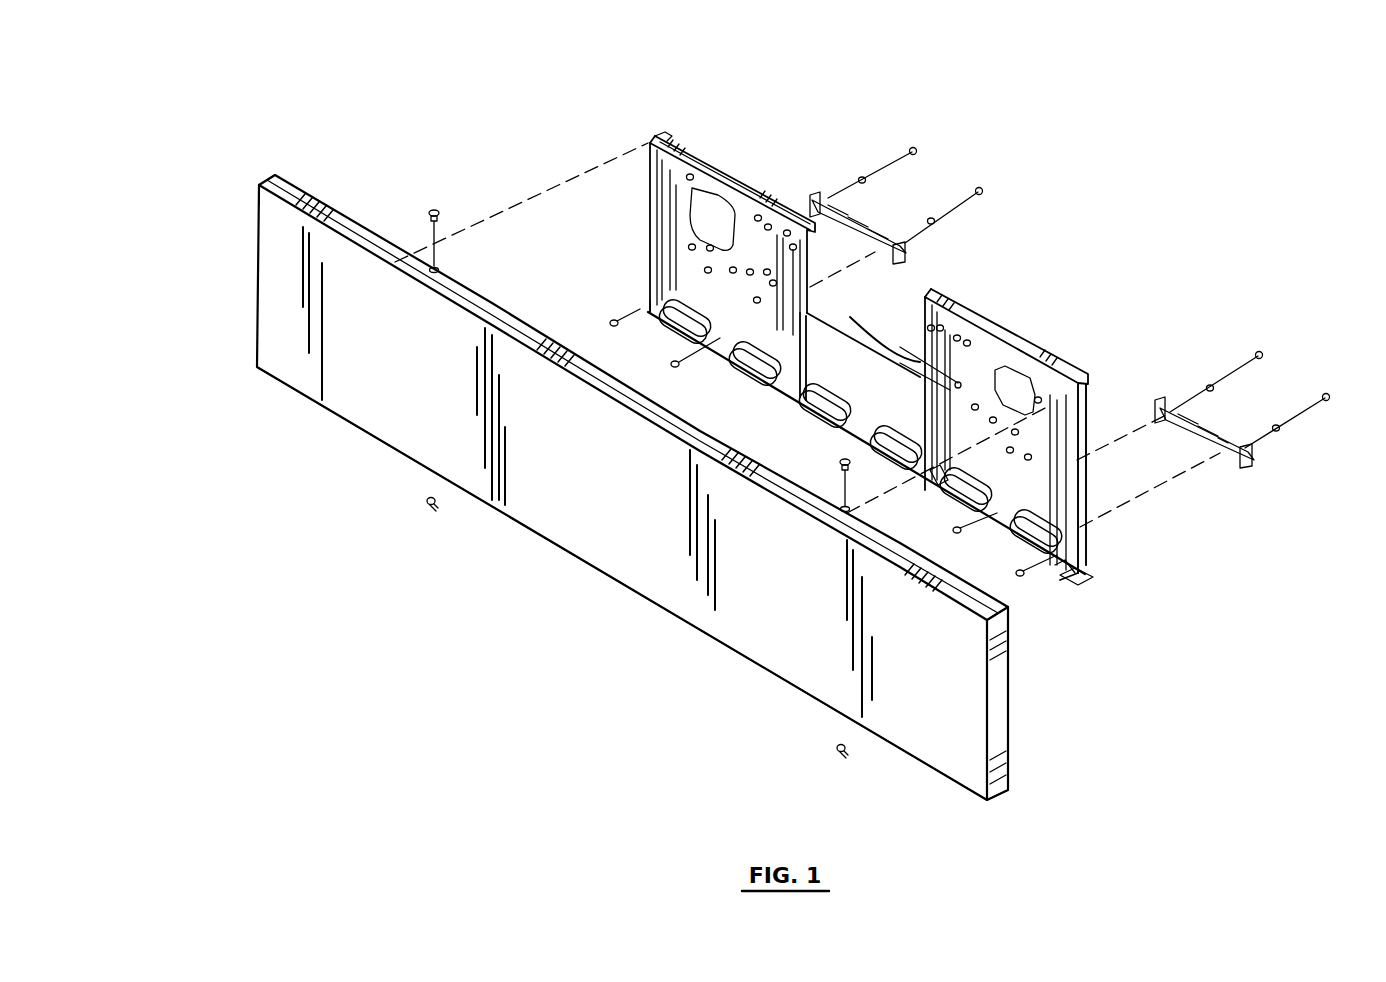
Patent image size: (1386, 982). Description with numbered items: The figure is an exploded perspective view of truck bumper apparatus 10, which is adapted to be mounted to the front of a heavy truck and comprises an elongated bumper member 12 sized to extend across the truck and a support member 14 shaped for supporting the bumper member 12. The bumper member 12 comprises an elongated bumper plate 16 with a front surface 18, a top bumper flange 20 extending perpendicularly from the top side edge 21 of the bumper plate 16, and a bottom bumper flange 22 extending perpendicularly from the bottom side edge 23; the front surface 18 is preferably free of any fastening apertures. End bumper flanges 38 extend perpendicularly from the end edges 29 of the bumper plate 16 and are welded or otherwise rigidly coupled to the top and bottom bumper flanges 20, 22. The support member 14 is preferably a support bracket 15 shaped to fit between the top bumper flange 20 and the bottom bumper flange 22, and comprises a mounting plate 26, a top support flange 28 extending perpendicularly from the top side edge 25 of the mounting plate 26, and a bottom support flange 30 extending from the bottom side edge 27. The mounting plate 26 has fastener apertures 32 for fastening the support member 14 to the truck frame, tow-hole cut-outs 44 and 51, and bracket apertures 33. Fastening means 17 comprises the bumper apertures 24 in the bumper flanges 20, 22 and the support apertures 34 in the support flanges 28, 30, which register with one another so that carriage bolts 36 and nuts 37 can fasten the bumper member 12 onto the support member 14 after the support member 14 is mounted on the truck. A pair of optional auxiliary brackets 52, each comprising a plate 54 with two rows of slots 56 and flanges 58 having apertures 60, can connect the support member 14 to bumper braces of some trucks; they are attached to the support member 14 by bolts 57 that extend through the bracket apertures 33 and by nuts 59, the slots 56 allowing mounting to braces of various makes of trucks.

The truck bumper apparatus 10 is at (533, 121).
The bumper member 12 is at (1015, 683).
The support member 14 is at (995, 323).
The support bracket 15 is at (646, 208).
The bumper plate 16 is at (597, 527).
The fastening means 17 is at (649, 136).
The front surface 18 is at (298, 355).
The top bumper flange 20 is at (290, 183).
The top side edge 21 is at (276, 218).
The bottom bumper flange 22 is at (953, 795).
The bottom side edge 23 is at (812, 678).
The bumper apertures 24 is at (445, 272).
The top side edge 25 is at (702, 172).
The mounting plate 26 is at (1080, 493).
The bottom side edge 27 is at (782, 399).
The top support flange 28 is at (687, 143).
The end edges 29 is at (975, 660).
The bottom support flange 30 is at (1090, 572).
The fastener apertures 32 is at (773, 284).
The bracket apertures 33 is at (945, 490).
The support apertures 34 is at (665, 138).
The carriage bolts 36 is at (432, 212).
The nuts 37 is at (1083, 437).
The end bumper flanges 38 is at (1005, 753).
The tow-hole cut-out 44 is at (715, 218).
The tow-hole cut-out 51 is at (903, 295).
The auxiliary brackets 52 is at (869, 205).
The plate 54 is at (1253, 455).
The slots 56 is at (1197, 405).
The bolts 57 is at (1020, 568).
The flanges 58 is at (1160, 405).
The nuts 59 is at (1327, 403).
The apertures 60 is at (1167, 422).